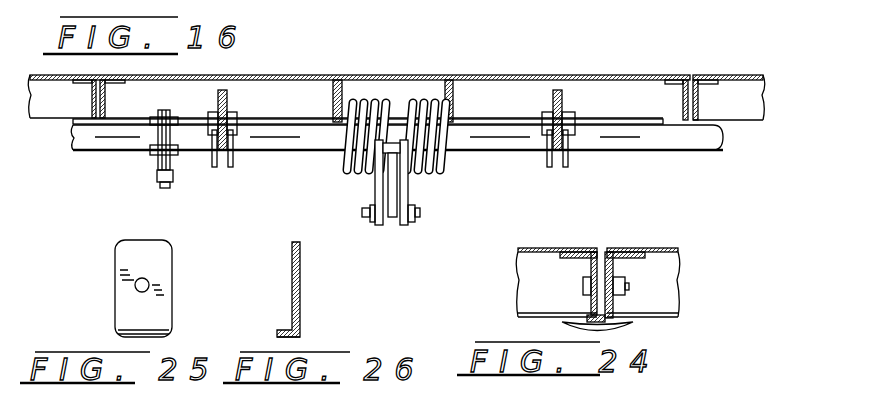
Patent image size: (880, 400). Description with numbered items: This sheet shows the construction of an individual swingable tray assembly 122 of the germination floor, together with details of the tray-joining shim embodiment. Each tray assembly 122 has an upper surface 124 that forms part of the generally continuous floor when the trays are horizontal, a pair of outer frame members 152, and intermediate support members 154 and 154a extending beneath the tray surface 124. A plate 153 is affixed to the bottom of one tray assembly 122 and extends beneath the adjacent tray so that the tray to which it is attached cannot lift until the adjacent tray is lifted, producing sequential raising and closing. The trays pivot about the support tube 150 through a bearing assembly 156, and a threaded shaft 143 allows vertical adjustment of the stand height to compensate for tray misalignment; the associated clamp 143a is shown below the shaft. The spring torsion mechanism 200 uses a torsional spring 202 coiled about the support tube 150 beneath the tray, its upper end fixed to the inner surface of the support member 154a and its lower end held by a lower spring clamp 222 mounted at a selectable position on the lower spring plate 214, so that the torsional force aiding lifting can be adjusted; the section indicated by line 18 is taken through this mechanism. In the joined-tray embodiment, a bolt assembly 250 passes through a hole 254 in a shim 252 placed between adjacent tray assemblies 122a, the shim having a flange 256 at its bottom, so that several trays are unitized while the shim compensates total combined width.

In FIG. 16, the section line 18 is at (416, 45).
In FIG. 16, the tray assembly 122 is at (371, 71).
In FIG. 24, the tray assembly 122a is at (623, 246).
In FIG. 16, the upper surface 124 is at (300, 75).
In FIG. 16, the threaded shaft 143 is at (160, 187).
In FIG. 16, the U-bolt clamp 143a is at (171, 152).
In FIG. 16, the support tube 150 is at (703, 135).
In FIG. 16, the outer frame member 152 is at (690, 93).
In FIG. 16, the plate 153 is at (675, 125).
In FIG. 16, the intermediate support member 154 is at (563, 92).
In FIG. 16, the intermediate support member 154a is at (333, 100).
In FIG. 16, the bearing assembly 156 is at (541, 145).
In FIG. 16, the spring torsion mechanism 200 is at (344, 180).
In FIG. 16, the torsional spring 202 is at (440, 163).
In FIG. 16, the lower spring plate 214 is at (390, 218).
In FIG. 16, the lower spring clamp 222 is at (372, 222).
In FIG. 24, the bolt assembly 250 is at (583, 284).
In FIG. 24, the shim 252 is at (598, 268).
In FIG. 25, the shim 252 is at (166, 254).
In FIG. 25, the hole 254 is at (135, 285).
In FIG. 26, the hole 254 is at (290, 285).
In FIG. 24, the flange 256 is at (575, 328).
In FIG. 25, the flange 256 is at (126, 337).
In FIG. 26, the flange 256 is at (286, 334).